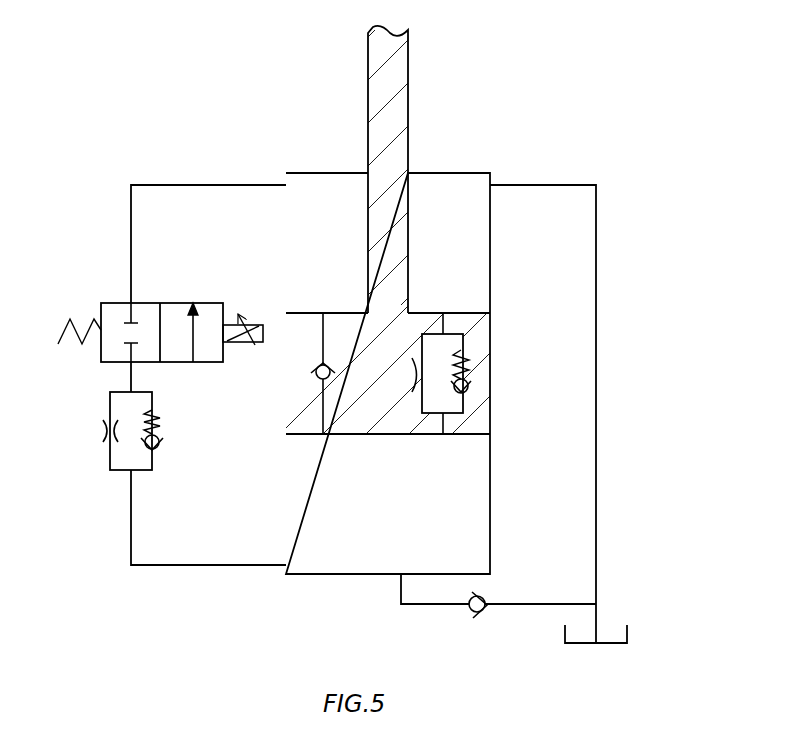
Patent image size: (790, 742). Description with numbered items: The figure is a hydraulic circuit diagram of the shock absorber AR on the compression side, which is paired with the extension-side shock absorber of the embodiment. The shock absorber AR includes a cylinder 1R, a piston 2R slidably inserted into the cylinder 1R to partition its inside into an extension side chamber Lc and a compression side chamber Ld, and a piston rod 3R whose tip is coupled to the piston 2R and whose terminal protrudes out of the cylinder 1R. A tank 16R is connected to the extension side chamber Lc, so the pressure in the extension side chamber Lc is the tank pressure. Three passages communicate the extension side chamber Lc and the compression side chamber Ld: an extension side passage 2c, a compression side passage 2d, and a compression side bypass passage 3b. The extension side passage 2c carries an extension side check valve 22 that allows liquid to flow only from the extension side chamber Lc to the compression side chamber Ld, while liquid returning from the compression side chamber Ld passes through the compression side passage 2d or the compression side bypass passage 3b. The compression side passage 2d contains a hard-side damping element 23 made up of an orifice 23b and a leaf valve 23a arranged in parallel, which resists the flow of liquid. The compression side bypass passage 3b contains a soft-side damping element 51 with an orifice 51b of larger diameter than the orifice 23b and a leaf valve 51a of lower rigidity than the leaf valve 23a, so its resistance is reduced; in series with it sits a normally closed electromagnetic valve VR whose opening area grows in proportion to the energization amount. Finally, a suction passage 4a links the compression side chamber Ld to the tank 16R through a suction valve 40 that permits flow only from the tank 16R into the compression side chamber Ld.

The shock absorber on the compression side AR is at (116, 117).
The cylinder 1R is at (492, 478).
The piston 2R is at (345, 437).
The piston rod 3R is at (400, 118).
The extension side passage 2c is at (323, 418).
The compression side passage 2d is at (446, 323).
The extension side check valve 22 is at (317, 380).
The hard-side damping element 23 is at (471, 403).
The leaf valve 23a is at (468, 384).
The orifice 23b is at (411, 380).
The compression side bypass passage 3b is at (128, 250).
The electromagnetic valve VR is at (108, 365).
The soft-side damping element 51 is at (102, 462).
The leaf valve 51a is at (160, 449).
The orifice 51b is at (105, 431).
The suction passage 4a is at (421, 606).
The suction valve 40 is at (511, 601).
The tank 16R is at (628, 631).
The extension side chamber Lc is at (446, 256).
The compression side chamber Ld is at (447, 521).